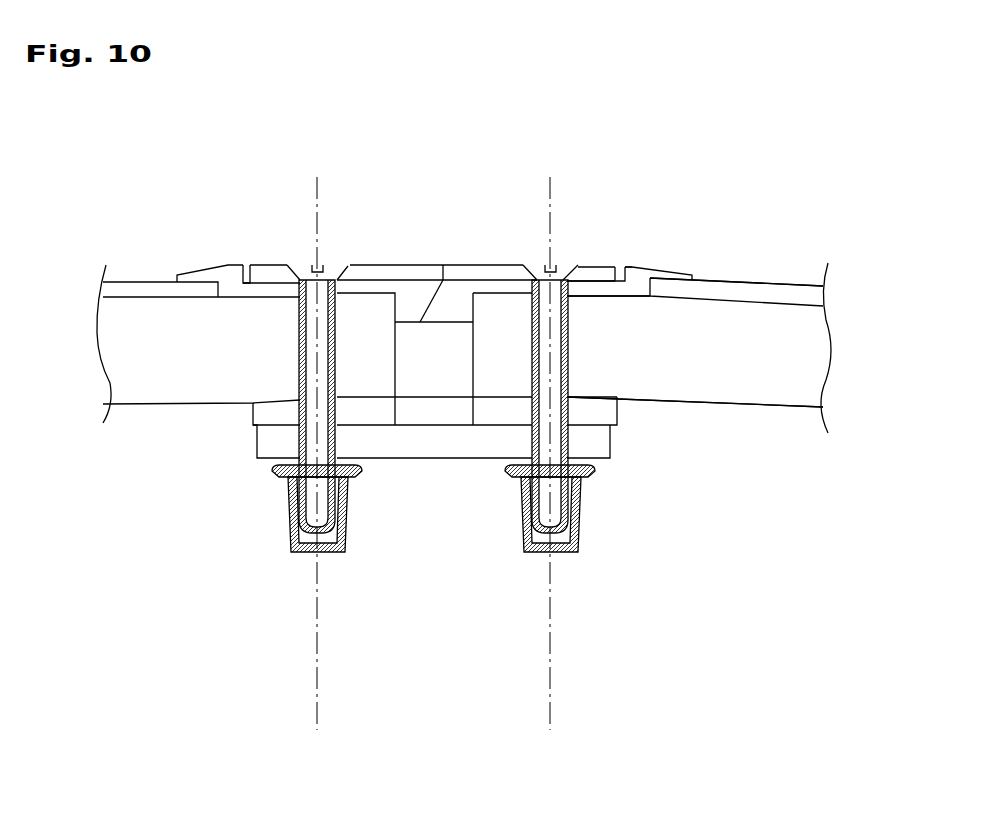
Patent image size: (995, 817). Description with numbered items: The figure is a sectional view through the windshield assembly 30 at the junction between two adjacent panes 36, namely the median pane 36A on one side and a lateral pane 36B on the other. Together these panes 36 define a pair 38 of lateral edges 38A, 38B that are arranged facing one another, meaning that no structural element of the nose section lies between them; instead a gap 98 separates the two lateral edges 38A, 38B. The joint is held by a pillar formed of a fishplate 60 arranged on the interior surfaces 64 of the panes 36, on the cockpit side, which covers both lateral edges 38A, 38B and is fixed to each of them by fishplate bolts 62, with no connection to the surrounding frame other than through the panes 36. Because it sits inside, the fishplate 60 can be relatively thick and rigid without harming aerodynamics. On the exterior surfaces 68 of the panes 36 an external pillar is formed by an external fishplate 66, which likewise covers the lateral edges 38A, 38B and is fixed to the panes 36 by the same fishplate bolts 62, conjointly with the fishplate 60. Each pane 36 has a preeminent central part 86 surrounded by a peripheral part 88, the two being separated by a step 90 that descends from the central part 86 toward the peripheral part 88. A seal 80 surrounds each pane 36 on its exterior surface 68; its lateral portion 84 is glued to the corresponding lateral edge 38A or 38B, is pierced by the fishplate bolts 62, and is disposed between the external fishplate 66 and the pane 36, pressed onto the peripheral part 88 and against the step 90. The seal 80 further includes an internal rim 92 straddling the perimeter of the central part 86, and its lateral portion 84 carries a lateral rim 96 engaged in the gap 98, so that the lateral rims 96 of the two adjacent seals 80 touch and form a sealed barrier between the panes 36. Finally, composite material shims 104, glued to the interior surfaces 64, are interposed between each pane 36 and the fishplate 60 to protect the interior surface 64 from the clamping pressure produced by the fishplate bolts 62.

The windshield assembly 30 is at (140, 465).
The pane 36 is at (464, 288).
The median pane 36A is at (743, 323).
The lateral pane 36B is at (160, 345).
The pair of lateral edges 38 is at (390, 132).
The lateral edge 38A is at (357, 293).
The lateral edge 38B is at (502, 310).
The fishplate 60 is at (392, 443).
The fishplate bolt 62 is at (580, 532).
The interior surface 64 is at (717, 407).
The external fishplate 66 is at (461, 276).
The exterior surface 68 is at (715, 277).
The seal 80 is at (262, 293).
The lateral portion 84 is at (621, 292).
The central part 86 is at (787, 297).
The peripheral part 88 is at (600, 327).
The step 90 is at (633, 272).
The internal rim 92 is at (230, 290).
The lateral rim 96 is at (415, 313).
The gap 98 is at (453, 407).
The composite material shim 104 is at (603, 413).